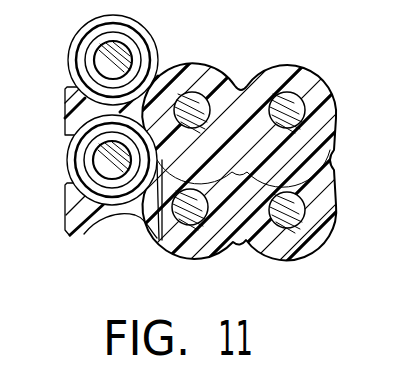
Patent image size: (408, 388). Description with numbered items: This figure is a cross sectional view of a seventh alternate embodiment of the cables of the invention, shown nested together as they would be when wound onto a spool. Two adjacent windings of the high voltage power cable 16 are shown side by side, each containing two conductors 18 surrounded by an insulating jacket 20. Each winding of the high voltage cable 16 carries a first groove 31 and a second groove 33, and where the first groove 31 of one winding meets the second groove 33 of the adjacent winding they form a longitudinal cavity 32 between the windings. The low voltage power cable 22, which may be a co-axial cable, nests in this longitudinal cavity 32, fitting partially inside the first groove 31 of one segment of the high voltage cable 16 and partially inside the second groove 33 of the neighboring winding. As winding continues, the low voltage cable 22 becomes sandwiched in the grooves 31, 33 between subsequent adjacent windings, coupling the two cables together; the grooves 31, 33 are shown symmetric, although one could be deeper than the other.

The high voltage power cable 16 is at (325, 103).
The conductors 18 is at (218, 80).
The insulating jacket 20 is at (318, 139).
The low voltage power cable 22 is at (79, 48).
The first groove 31 is at (158, 72).
The longitudinal cavity 32 is at (147, 228).
The second groove 33 is at (88, 142).